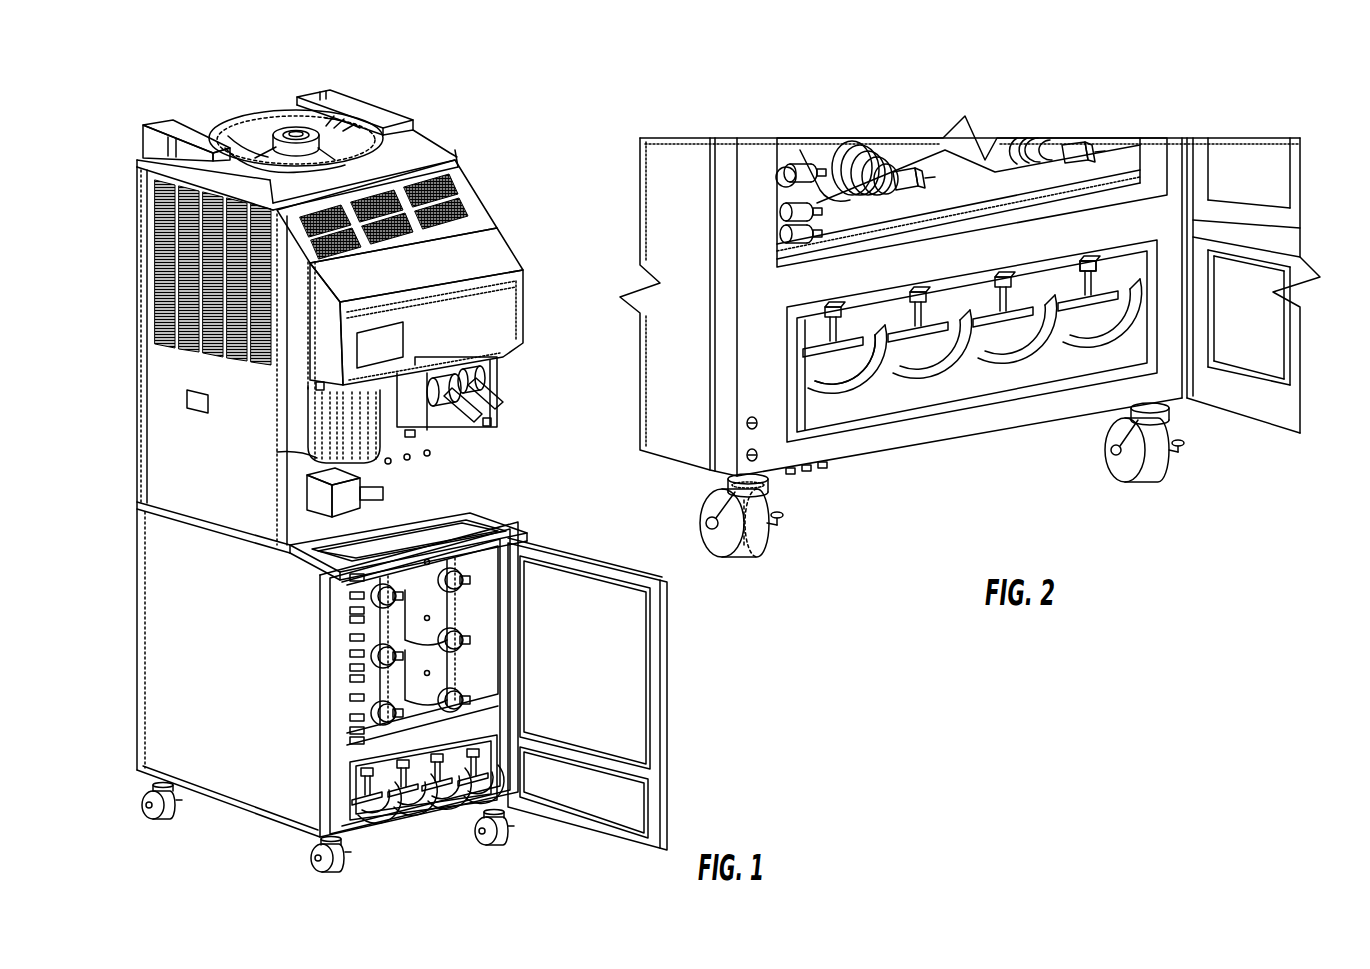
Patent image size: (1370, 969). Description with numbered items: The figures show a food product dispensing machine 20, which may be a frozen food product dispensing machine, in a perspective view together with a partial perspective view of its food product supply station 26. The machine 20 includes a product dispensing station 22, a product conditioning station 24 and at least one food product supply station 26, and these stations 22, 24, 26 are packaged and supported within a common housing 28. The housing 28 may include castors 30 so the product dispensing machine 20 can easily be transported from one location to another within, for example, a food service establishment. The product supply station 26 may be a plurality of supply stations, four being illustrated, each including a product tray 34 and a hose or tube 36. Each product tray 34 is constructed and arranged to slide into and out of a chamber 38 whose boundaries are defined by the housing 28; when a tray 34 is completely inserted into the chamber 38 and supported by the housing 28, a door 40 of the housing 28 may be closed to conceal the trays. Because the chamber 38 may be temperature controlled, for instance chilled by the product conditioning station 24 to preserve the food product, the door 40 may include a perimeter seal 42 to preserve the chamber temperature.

In FIG. 1, the food product dispensing machine 20 is at (503, 102).
In FIG. 1, the product dispensing station 22 is at (460, 448).
In FIG. 1, the product conditioning station 24 is at (262, 106).
In FIG. 1, the food product supply station 26 is at (365, 805).
In FIG. 2, the food product supply station 26 is at (970, 378).
In FIG. 1, the housing 28 is at (163, 430).
In FIG. 2, the housing 28 is at (1160, 390).
In FIG. 1, the castors 30 is at (492, 840).
In FIG. 2, the castors 30 is at (773, 533).
In FIG. 1, the product tray 34 is at (422, 792).
In FIG. 2, the product tray 34 is at (800, 392).
In FIG. 2, the hose or tube 36 is at (1093, 299).
In FIG. 2, the chamber 38 is at (853, 400).
In FIG. 1, the door 40 is at (670, 687).
In FIG. 2, the door 40 is at (1271, 316).
In FIG. 2, the perimeter seal 42 is at (1293, 270).